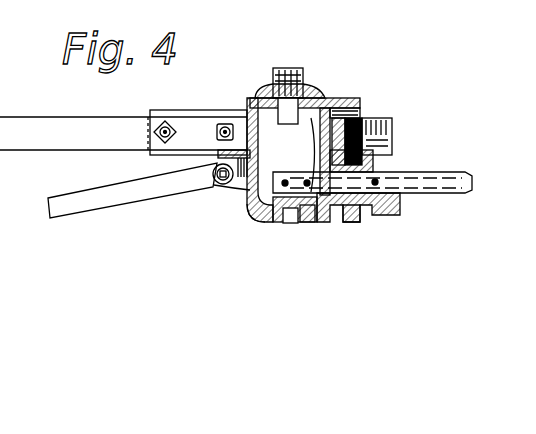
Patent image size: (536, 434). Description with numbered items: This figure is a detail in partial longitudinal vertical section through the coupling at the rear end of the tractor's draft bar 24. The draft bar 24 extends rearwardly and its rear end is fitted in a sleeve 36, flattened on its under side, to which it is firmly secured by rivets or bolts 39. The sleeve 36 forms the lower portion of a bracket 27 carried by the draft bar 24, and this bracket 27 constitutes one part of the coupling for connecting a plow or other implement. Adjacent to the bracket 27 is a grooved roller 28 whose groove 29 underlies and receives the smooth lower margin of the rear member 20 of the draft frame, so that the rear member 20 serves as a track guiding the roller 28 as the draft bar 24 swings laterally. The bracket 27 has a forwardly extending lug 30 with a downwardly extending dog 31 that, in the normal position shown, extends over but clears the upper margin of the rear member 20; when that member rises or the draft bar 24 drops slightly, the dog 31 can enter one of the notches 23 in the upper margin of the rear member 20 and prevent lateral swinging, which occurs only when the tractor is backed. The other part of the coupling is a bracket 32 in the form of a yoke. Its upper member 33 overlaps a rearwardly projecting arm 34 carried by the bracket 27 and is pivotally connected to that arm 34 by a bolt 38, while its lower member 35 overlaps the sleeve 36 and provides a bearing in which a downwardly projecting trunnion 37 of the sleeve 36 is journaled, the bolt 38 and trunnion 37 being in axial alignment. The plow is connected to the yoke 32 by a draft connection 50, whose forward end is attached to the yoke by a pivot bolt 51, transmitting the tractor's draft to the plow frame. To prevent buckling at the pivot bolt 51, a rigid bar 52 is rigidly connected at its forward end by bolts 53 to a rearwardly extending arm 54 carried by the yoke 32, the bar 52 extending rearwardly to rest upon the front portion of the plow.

The rear member 20 is at (388, 128).
The notches 23 is at (366, 122).
The draft bar 24 is at (470, 176).
The bracket 27 is at (342, 110).
The grooved roller 28 is at (370, 207).
The groove 29 is at (352, 222).
The lug 30 is at (340, 118).
The dog 31 is at (352, 120).
The bracket 32 is at (244, 200).
The upper member 33 is at (320, 100).
The arm 34 is at (250, 99).
The lower member 35 is at (310, 224).
The sleeve 36 is at (320, 216).
The trunnion 37 is at (290, 224).
The bolt 38 is at (291, 68).
The rivets or bolts 39 is at (268, 206).
The draft connection 50 is at (112, 207).
The pivot bolt 51 is at (216, 186).
The rigid bar 52 is at (68, 150).
The bolts 53 is at (221, 127).
The arm 54 is at (168, 122).